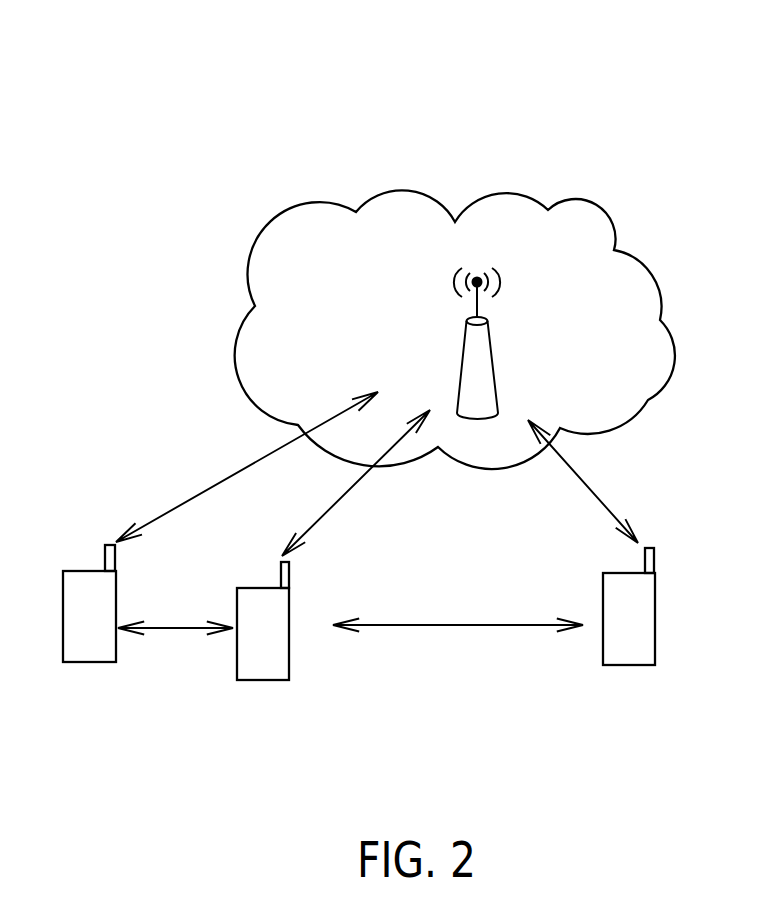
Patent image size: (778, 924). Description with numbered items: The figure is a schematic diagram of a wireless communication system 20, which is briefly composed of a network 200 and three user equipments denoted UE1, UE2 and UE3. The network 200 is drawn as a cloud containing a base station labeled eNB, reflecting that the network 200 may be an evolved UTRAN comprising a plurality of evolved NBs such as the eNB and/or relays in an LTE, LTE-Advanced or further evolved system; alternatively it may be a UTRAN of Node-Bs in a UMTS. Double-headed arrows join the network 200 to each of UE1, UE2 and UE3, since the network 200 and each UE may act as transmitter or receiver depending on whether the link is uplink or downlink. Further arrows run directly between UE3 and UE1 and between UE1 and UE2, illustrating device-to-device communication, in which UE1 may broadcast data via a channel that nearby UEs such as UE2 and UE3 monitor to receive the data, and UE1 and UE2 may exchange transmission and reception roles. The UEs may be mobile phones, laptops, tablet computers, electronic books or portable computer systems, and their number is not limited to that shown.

The wireless communication system 20 is at (560, 76).
The network 200 is at (600, 197).
The evolved NB eNB is at (440, 343).
The user equipment UE1 is at (263, 641).
The user equipment UE2 is at (629, 627).
The user equipment UE3 is at (89, 625).